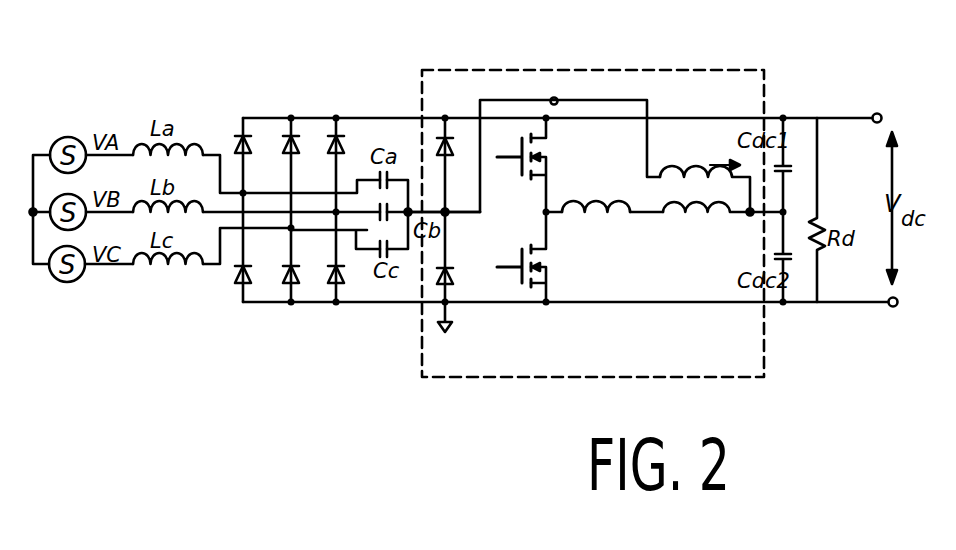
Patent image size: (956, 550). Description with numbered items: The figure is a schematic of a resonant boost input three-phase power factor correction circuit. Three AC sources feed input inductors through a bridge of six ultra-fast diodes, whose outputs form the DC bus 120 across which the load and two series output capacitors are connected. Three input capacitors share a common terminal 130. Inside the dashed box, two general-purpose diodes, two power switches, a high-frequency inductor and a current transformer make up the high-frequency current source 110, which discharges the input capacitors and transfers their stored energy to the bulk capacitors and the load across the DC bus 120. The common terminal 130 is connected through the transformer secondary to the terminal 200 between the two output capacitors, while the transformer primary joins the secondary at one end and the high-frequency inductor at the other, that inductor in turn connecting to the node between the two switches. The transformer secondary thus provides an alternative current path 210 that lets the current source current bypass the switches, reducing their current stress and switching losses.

The high-frequency current source 110 is at (667, 70).
The DC bus 120 is at (350, 116).
The common terminal of the input capacitors 130 is at (446, 214).
The terminal between the output capacitors 200 is at (776, 222).
The alternative current path 210 is at (556, 98).